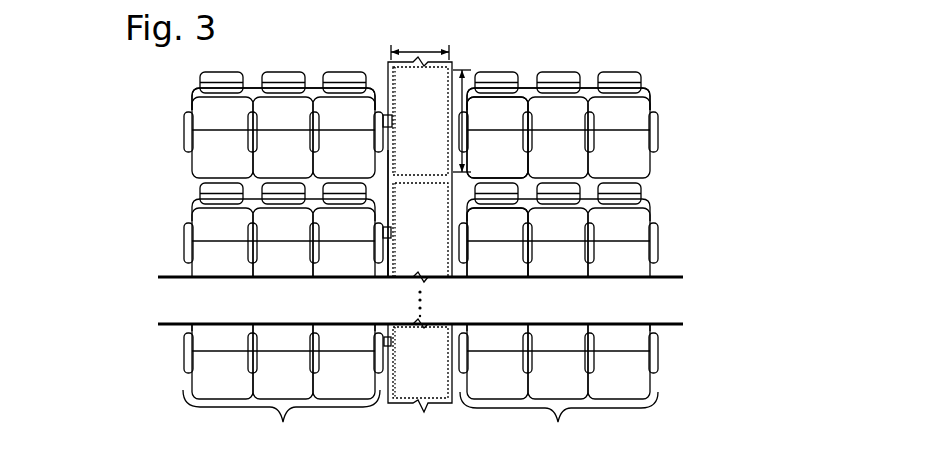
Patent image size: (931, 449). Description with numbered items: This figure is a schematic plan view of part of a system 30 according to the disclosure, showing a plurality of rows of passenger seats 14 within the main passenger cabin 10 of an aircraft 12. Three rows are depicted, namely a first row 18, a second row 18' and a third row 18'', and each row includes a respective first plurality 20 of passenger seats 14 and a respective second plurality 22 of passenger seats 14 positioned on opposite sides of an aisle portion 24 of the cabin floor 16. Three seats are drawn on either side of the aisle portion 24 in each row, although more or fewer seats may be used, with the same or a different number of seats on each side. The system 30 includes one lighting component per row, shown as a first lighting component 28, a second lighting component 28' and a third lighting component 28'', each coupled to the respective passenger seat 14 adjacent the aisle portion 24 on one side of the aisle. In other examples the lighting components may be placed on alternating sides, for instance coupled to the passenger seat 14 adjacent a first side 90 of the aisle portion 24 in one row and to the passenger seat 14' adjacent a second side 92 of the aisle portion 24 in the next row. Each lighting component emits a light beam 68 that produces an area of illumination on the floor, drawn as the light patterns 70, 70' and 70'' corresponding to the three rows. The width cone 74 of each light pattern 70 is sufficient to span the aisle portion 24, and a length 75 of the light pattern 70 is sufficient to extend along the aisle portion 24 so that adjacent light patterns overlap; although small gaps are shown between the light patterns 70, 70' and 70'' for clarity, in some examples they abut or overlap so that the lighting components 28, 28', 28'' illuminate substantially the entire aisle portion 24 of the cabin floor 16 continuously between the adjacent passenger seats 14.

The passenger cabin 10 is at (682, 82).
The passenger aircraft 12 is at (695, 53).
The system 30 is at (722, 27).
The passenger seat 14 is at (283, 109).
The passenger seat 14' is at (511, 178).
The cabin floor 16 is at (190, 200).
The row 18 is at (596, 125).
The second row 18' is at (598, 236).
The third row 18'' is at (601, 346).
The first plurality of passenger seats 20 is at (283, 370).
The second plurality of passenger seats 22 is at (559, 420).
The aisle portion 24 is at (388, 70).
The lighting component 28 is at (406, 116).
The second lighting component 28' is at (408, 226).
The third lighting component 28'' is at (411, 349).
The light beam 68 is at (382, 240).
The light pattern 70 is at (420, 121).
The light pattern 70' is at (420, 230).
The light pattern 70'' is at (420, 362).
The width cone 74 is at (418, 48).
The length 75 is at (468, 102).
The first side 90 is at (388, 166).
The second side 92 is at (458, 326).